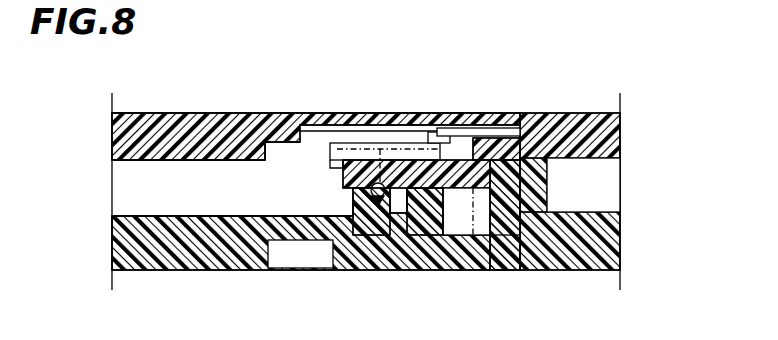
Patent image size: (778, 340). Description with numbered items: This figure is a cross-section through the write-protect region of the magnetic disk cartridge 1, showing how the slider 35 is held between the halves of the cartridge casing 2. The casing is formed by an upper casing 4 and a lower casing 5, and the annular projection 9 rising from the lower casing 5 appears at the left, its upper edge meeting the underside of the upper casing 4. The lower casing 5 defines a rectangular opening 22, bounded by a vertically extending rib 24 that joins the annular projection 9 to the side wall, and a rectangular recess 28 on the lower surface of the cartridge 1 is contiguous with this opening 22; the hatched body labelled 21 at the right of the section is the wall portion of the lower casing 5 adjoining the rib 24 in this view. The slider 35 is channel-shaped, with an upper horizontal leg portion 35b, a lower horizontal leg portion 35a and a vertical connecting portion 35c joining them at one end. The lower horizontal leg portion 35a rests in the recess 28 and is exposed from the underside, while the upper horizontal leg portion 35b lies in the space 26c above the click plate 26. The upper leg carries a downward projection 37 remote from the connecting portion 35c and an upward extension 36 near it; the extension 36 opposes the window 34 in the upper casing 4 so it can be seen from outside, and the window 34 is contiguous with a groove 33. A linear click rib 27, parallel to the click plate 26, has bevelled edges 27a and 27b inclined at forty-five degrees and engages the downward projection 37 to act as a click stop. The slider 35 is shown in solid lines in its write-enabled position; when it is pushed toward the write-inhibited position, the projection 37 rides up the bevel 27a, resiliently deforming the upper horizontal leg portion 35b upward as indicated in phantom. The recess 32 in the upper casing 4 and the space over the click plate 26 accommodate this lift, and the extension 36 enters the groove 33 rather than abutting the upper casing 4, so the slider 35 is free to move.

The magnetic disk cartridge 1 is at (240, 111).
The cartridge casing 2 is at (112, 163).
The upper casing 4 is at (166, 113).
The lower casing 5 is at (178, 272).
The annular projection 9 is at (125, 199).
The side wall block 21 is at (541, 111).
The rectangular opening 22 is at (447, 237).
The rib 24 is at (548, 183).
The click plate 26 is at (417, 115).
The space 26c is at (502, 114).
The click rib 27 is at (362, 115).
The bevelled edge 27a is at (378, 115).
The bevelled edge 27b is at (353, 193).
The recess 28 is at (272, 268).
The recess 32 is at (277, 114).
The groove 33 is at (312, 115).
The window 34 is at (483, 113).
The slider 35 is at (495, 262).
The lower horizontal leg portion 35a is at (330, 270).
The upper horizontal leg portion 35b is at (331, 268).
The vertical connecting portion 35c is at (483, 240).
The extension 36 is at (435, 115).
The projection 37 is at (360, 250).